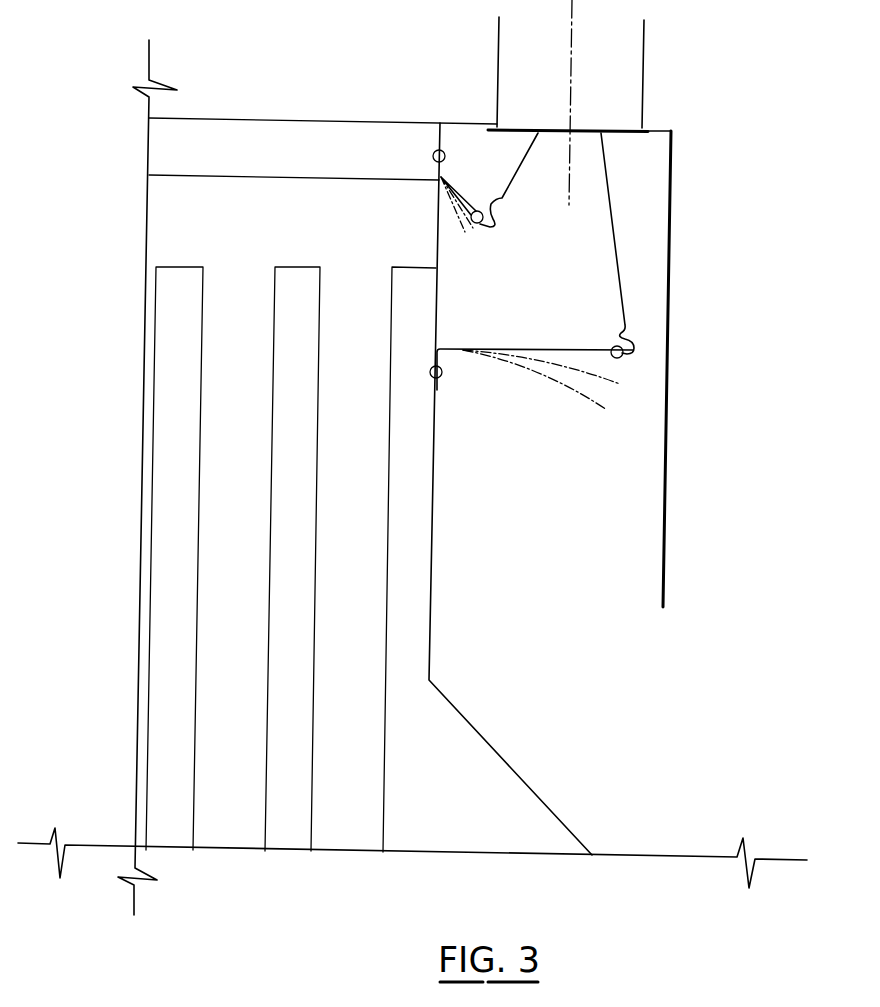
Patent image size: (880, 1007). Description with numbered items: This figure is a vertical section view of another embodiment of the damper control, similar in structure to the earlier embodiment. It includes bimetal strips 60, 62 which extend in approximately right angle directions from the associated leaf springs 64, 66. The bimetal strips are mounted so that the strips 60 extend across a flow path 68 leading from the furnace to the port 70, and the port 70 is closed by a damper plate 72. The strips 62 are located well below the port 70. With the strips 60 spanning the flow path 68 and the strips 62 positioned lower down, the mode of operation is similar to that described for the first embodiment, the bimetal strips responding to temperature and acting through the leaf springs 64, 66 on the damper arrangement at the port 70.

The bimetal strip 60 is at (470, 197).
The bimetal strip 62 is at (487, 348).
The leaf spring 64 is at (520, 168).
The leaf spring 66 is at (620, 272).
The flow path 68 is at (440, 208).
The port 70 is at (552, 73).
The damper plate 72 is at (615, 131).